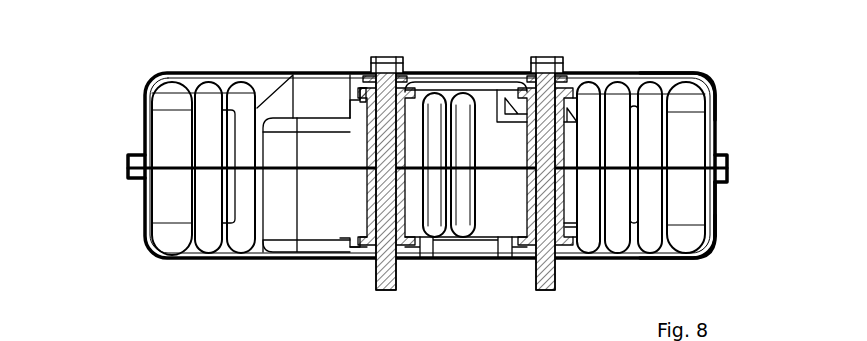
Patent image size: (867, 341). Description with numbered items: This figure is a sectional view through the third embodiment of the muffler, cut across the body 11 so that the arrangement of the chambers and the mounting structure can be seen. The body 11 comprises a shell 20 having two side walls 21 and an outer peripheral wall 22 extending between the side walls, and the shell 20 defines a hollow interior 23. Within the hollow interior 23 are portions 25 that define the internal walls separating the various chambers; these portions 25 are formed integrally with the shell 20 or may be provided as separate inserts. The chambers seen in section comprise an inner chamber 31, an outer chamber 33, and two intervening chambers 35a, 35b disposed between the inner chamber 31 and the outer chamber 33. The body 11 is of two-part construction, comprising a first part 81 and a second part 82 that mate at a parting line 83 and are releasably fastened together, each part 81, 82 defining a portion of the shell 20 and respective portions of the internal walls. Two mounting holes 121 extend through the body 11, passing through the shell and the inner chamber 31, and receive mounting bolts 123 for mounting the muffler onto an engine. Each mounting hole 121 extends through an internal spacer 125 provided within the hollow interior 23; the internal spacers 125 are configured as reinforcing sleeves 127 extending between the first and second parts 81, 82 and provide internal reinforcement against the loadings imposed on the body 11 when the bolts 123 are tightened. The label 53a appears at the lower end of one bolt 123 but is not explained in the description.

The body 11 is at (157, 87).
The side walls 21 is at (325, 73).
The outer peripheral wall 22 is at (147, 115).
The outer chamber 33 is at (173, 125).
The intervening chamber 35b is at (210, 153).
The intervening chamber 35a is at (233, 174).
The portions 25 is at (233, 193).
The inner chamber 31 is at (280, 213).
The mounting holes 121 is at (353, 138).
The mounting bolts 123 is at (377, 68).
The internal spacers 125 is at (365, 187).
The reinforcing sleeves 127 is at (365, 212).
The bolt shaft 53a is at (462, 202).
The hollow interior 23 is at (590, 148).
The first part 81 is at (698, 73).
The second part 82 is at (700, 254).
The parting line 83 is at (730, 168).
The shell 20 is at (712, 238).